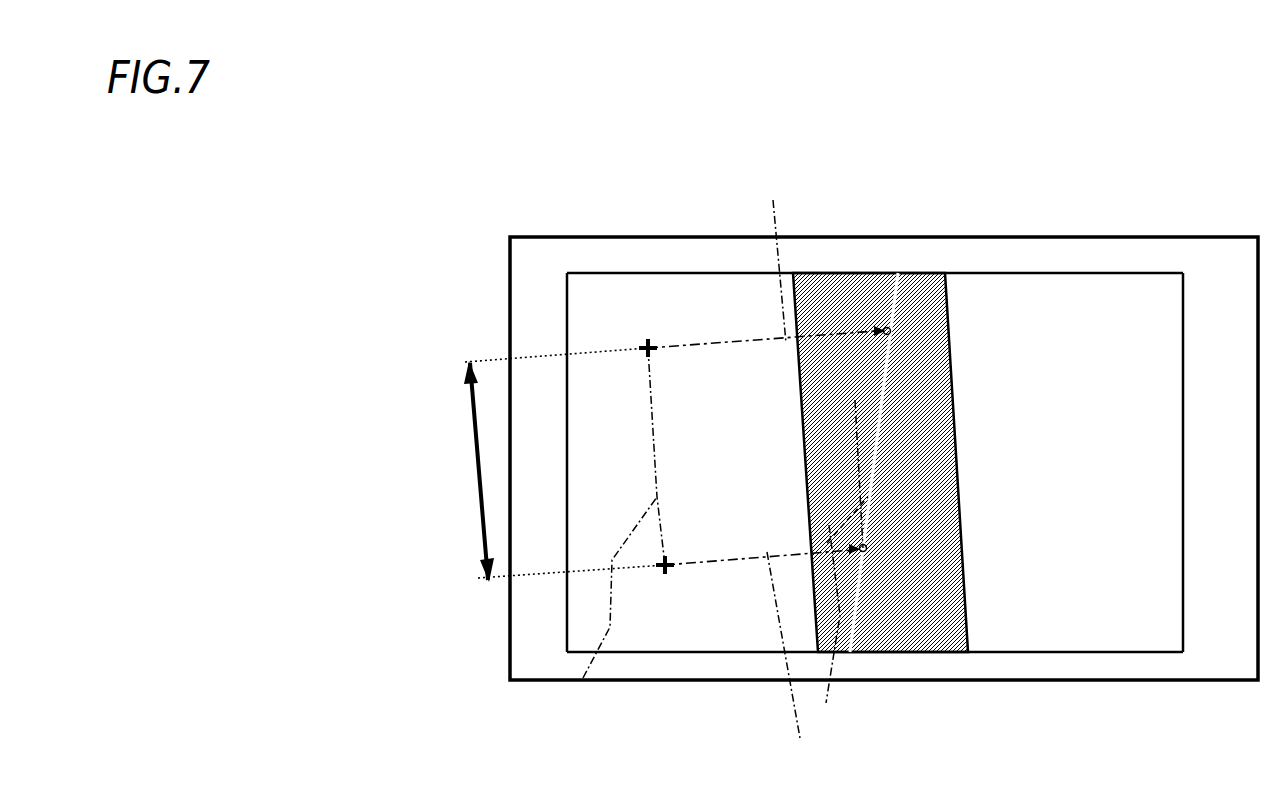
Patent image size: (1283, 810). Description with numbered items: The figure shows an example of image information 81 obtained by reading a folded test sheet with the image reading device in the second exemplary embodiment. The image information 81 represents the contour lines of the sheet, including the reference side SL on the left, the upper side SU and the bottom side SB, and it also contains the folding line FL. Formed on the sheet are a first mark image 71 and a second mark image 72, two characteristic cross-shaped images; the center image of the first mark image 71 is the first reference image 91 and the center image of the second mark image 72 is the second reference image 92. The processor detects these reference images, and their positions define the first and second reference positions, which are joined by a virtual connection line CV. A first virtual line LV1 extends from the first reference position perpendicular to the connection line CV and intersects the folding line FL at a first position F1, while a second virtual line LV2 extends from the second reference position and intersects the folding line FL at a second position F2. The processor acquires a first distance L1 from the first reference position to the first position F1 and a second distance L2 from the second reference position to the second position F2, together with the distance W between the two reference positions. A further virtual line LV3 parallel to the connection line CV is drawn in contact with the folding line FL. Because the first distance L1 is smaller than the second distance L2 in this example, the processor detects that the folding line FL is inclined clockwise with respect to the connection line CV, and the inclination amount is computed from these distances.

The image information 81 is at (830, 235).
The upper side of sheet SU is at (715, 270).
The bottom side of sheet SB is at (745, 653).
The reference side SL is at (566, 557).
The folding line FL is at (882, 393).
The second distance L2 is at (675, 340).
The first distance L1 is at (669, 557).
The distance between reference positions W is at (468, 471).
The second mark image 72 is at (658, 338).
The second reference image 92 is at (643, 338).
The first mark image 71 is at (677, 572).
The first reference image 91 is at (663, 570).
The virtual connection line CV is at (583, 678).
The second virtual line LV2 is at (769, 259).
The first virtual line LV1 is at (792, 662).
The third virtual line LV3 is at (837, 563).
The second position F2 is at (888, 327).
The first position F1 is at (863, 550).